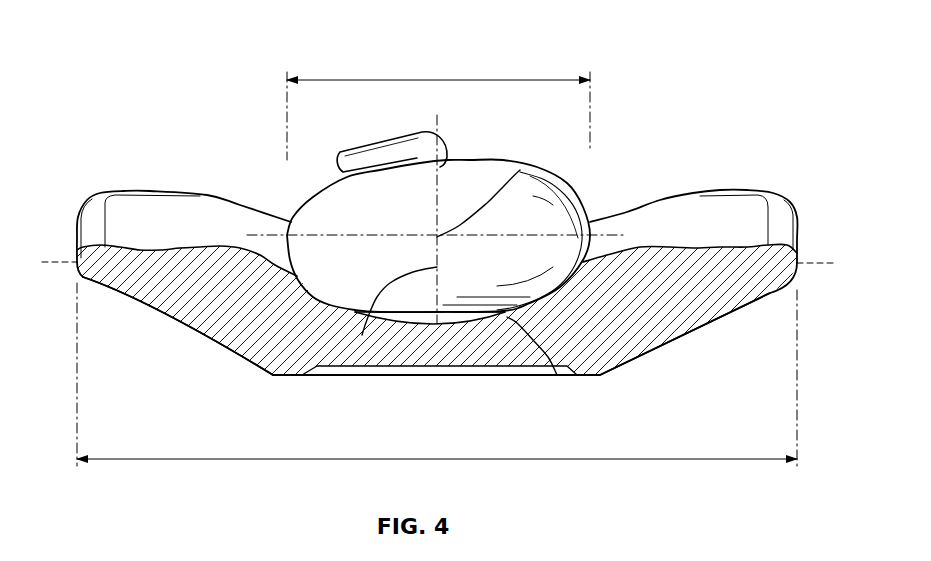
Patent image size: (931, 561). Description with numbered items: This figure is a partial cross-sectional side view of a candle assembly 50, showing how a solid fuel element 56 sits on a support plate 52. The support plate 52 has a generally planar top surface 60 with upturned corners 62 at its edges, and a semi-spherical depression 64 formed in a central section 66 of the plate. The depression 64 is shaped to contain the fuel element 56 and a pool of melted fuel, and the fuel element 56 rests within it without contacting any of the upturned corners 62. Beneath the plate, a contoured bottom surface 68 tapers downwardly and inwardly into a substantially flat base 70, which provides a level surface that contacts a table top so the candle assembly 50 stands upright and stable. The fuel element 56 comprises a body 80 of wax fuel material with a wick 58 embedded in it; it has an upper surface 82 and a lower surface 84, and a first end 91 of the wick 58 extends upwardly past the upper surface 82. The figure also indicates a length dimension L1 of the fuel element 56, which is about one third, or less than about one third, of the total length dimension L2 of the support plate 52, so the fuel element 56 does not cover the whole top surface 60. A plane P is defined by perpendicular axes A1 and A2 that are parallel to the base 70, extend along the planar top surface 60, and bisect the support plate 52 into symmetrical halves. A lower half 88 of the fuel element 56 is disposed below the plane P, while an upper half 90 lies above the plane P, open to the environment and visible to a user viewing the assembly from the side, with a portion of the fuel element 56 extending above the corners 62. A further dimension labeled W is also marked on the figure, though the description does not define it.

The candle assembly 50 is at (157, 70).
The support plate 52 is at (750, 210).
The fuel element 56 is at (562, 200).
The wick 58 is at (397, 147).
The top surface 60 is at (707, 202).
The upturned corners 62 is at (127, 203).
The depression 64 is at (559, 376).
The central section 66 is at (425, 352).
The bottom surface 68 is at (656, 336).
The base 70 is at (530, 375).
The body 80 is at (588, 220).
The upper surface 82 is at (488, 163).
The lower surface 84 is at (447, 330).
The lower half 88 is at (338, 278).
The upper half 90 is at (315, 205).
The first end 91 is at (343, 153).
The axis A1 is at (65, 260).
The axis A2 is at (520, 170).
The plane P is at (805, 260).
The width W is at (362, 335).
The length dimension L1 is at (437, 80).
The total length dimension L2 is at (438, 460).